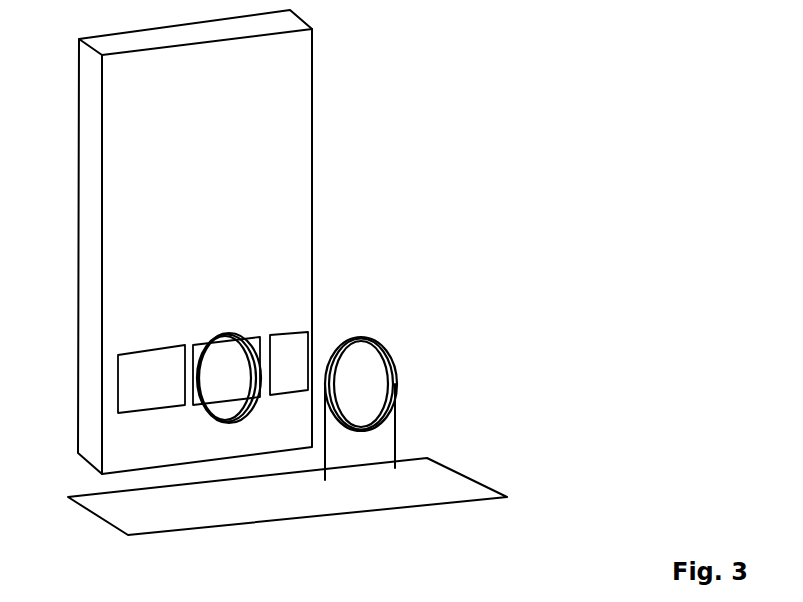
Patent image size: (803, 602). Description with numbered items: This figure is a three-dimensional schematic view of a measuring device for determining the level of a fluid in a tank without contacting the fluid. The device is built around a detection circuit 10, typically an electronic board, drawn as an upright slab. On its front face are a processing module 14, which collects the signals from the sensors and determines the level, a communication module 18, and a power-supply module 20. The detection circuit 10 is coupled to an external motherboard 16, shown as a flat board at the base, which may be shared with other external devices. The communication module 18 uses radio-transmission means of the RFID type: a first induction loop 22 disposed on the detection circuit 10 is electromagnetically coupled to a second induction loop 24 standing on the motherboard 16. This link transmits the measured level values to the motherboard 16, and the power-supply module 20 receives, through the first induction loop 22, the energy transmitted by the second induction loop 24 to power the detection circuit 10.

The detection circuit 10 is at (295, 137).
The processing module 14 is at (138, 363).
The motherboard 16 is at (128, 513).
The communication module 18 is at (218, 383).
The power-supply module 20 is at (233, 388).
The first induction loop 22 is at (235, 331).
The second induction loop 24 is at (388, 362).